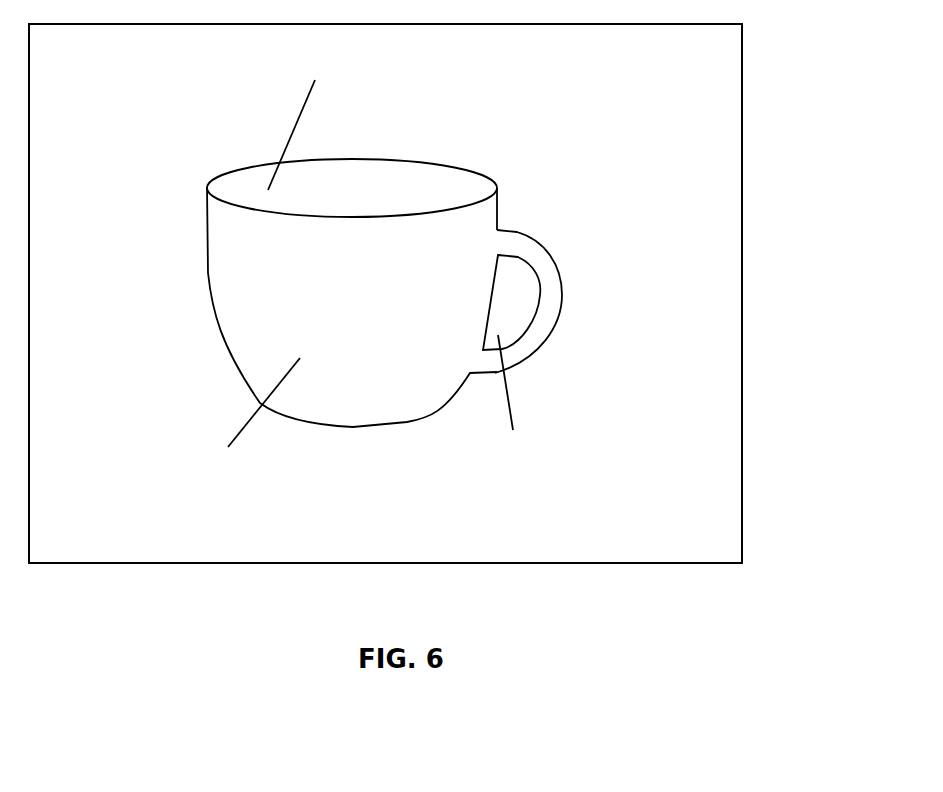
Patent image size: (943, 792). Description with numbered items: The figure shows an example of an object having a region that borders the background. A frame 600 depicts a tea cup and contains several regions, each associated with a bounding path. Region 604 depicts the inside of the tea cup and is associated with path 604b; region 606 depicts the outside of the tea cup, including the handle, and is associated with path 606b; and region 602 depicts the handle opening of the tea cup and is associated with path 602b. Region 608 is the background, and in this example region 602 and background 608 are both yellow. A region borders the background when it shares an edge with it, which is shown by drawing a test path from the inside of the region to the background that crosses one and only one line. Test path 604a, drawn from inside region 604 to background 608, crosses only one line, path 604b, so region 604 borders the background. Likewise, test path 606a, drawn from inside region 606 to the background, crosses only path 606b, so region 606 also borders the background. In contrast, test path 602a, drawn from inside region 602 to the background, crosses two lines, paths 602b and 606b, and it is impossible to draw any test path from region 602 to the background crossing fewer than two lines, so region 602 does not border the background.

The frame 600 is at (742, 515).
The region 602 is at (567, 330).
The test path 602a is at (513, 413).
The path 602b is at (540, 293).
The region 604 is at (371, 201).
The test path 604a is at (303, 108).
The path 604b is at (460, 163).
The region 606 is at (371, 324).
The test path 606a is at (242, 433).
The path 606b is at (225, 357).
The background 608 is at (632, 487).